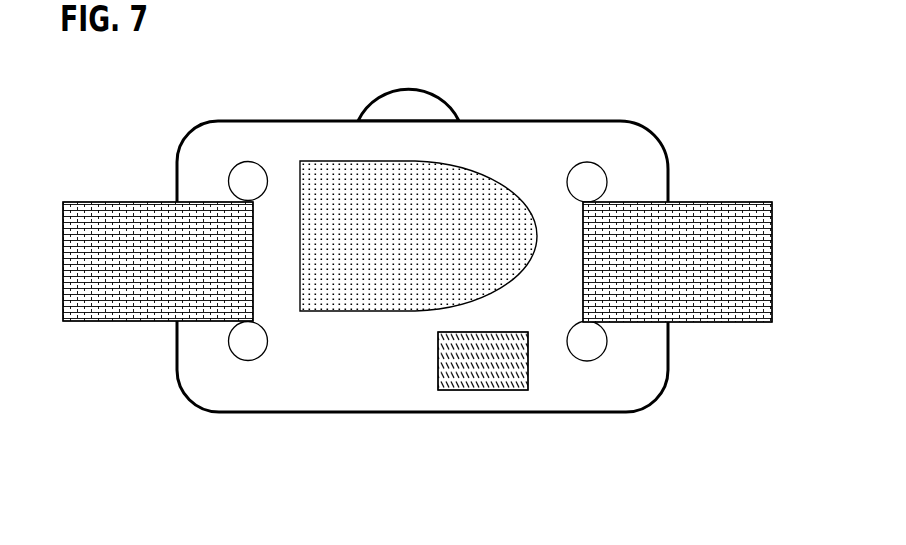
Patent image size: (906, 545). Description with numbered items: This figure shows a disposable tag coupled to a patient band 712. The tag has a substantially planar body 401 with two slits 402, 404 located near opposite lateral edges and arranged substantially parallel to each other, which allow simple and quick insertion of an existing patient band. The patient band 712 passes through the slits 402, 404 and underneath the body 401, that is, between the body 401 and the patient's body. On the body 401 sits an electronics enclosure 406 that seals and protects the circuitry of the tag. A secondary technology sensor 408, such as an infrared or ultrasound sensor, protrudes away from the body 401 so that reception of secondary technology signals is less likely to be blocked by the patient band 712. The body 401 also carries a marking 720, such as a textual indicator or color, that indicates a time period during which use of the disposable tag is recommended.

The body 401 is at (408, 372).
The slit 402 is at (255, 165).
The slit 404 is at (588, 162).
The electronics enclosure 406 is at (408, 244).
The secondary technology sensor 408 is at (440, 95).
The patient band 712 is at (135, 322).
The marking 720 is at (475, 392).